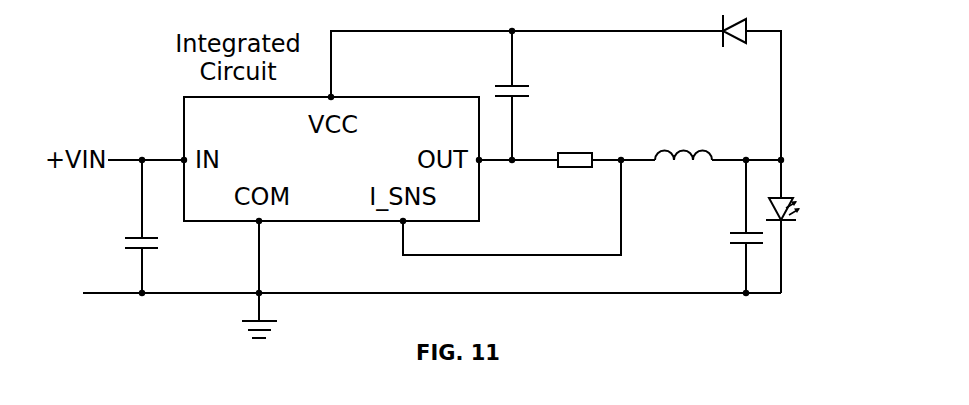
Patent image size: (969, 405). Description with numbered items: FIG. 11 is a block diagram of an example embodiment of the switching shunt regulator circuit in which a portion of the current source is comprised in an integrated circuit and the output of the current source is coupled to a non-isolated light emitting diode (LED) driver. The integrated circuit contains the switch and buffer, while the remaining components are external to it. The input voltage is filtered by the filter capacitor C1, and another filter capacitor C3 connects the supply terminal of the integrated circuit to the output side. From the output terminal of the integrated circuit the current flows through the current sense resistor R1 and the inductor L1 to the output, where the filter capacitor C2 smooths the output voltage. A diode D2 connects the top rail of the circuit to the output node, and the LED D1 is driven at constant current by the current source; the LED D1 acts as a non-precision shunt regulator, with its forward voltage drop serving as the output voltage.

The filter capacitor C1 is at (161, 226).
The filter capacitor C2 is at (728, 226).
The filter capacitor C3 is at (531, 95).
The current sense resistor R1 is at (576, 177).
The inductor L1 is at (683, 174).
The LED D1 is at (808, 226).
The diode D2 is at (735, 48).